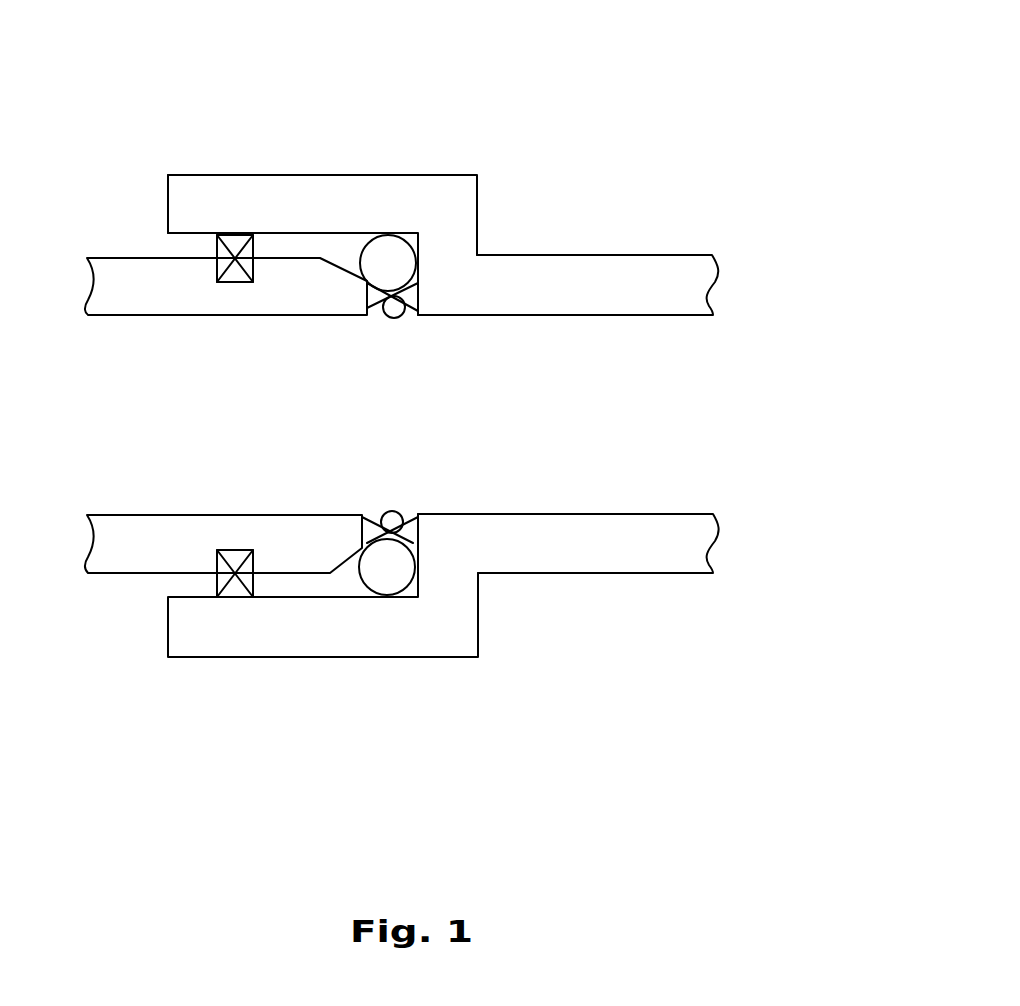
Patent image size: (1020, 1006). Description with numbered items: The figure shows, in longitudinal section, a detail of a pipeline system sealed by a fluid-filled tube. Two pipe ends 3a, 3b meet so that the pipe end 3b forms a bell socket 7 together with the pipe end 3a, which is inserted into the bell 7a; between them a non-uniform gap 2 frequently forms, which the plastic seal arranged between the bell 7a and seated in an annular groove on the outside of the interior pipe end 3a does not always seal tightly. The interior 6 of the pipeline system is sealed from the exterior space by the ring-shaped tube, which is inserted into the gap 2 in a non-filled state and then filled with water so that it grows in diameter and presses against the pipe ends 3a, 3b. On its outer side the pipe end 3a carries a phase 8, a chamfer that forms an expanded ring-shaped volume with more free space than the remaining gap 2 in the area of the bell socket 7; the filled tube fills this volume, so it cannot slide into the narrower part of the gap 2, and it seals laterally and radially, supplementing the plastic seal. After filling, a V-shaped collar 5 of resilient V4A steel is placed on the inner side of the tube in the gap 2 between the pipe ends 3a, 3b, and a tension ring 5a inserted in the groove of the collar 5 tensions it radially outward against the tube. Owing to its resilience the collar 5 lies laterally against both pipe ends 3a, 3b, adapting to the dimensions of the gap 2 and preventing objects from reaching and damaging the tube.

The gap 2 is at (413, 537).
The pipe end 3a is at (180, 288).
The pipe end 3b is at (513, 277).
The collar 5 is at (415, 520).
The tension ring 5a is at (362, 517).
The interior 6 is at (475, 410).
The bell socket 7 is at (492, 175).
The bell 7a is at (240, 214).
The phase 8 is at (355, 265).